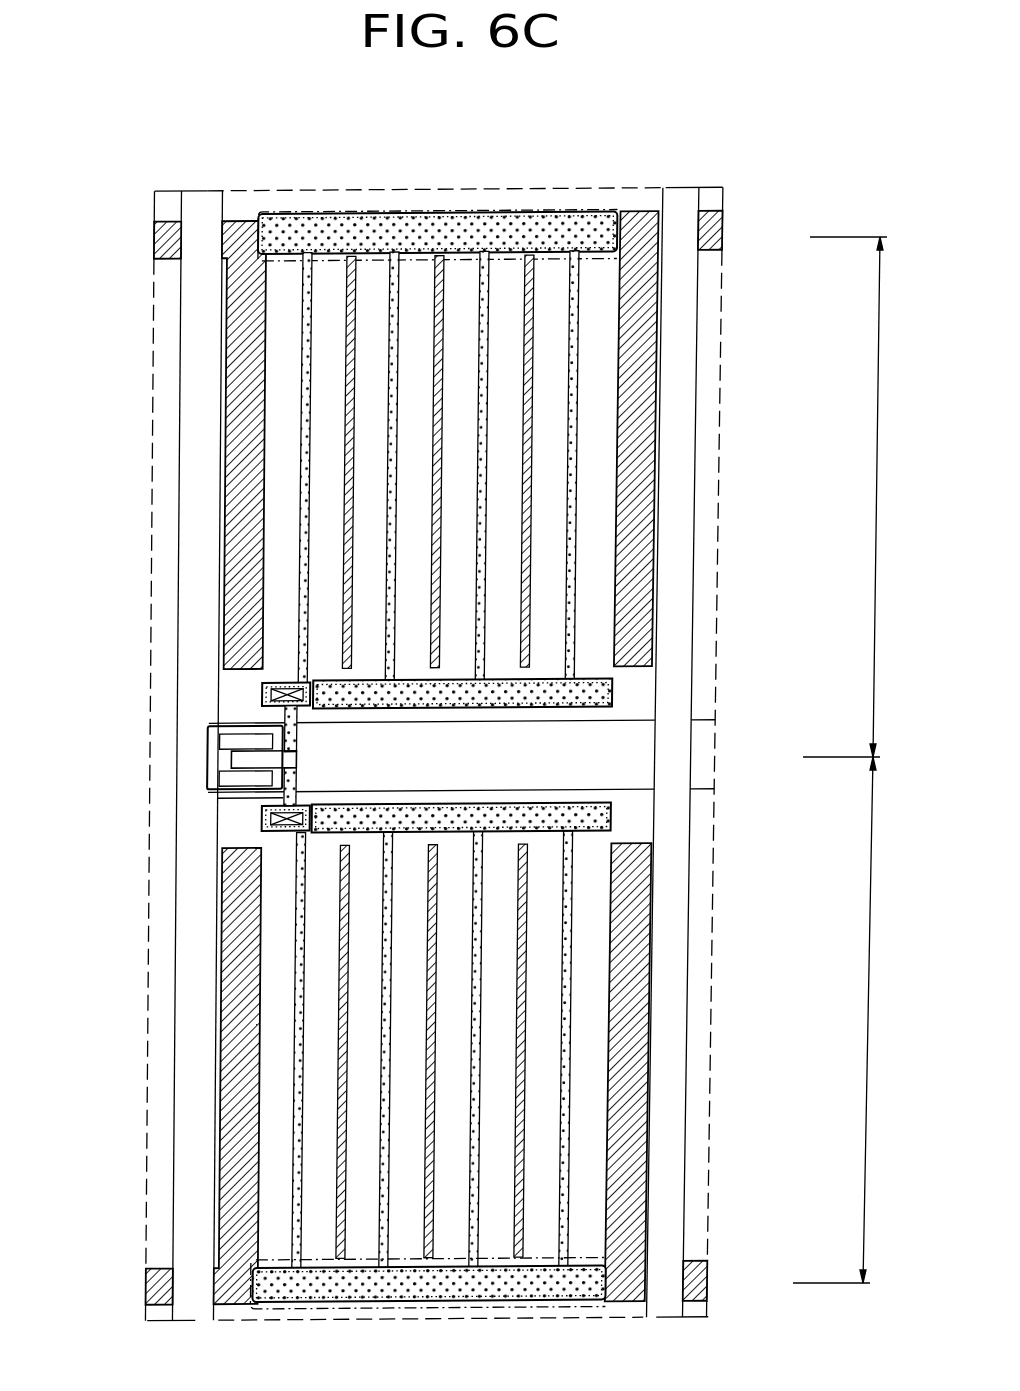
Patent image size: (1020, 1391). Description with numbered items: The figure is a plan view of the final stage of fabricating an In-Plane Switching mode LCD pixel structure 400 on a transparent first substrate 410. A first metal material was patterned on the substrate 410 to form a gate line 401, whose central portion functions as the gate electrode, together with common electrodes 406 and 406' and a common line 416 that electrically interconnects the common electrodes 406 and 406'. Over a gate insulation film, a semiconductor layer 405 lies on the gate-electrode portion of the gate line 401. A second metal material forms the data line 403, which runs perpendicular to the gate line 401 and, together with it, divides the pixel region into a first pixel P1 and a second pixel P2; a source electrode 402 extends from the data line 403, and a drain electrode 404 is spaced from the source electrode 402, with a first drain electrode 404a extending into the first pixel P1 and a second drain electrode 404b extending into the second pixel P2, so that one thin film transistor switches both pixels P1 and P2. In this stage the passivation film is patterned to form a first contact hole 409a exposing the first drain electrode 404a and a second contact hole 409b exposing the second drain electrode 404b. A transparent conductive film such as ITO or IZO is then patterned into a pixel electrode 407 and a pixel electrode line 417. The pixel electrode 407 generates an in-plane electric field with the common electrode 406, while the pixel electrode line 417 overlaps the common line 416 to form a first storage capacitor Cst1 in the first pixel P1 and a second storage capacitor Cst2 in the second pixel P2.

The array substrate pixel 400 is at (110, 161).
The gate line 401 is at (700, 737).
The source electrode 402 is at (246, 728).
The data line 403 is at (190, 458).
The drain electrode 404 is at (236, 763).
The first drain electrode 404a is at (264, 708).
The second drain electrode 404b is at (291, 794).
The semiconductor layer 405 is at (224, 758).
The common electrode 406 is at (435, 678).
The common electrode 406' is at (449, 757).
The pixel electrode 407 is at (385, 290).
The first contact hole 409a is at (262, 685).
The second contact hole 409b is at (278, 832).
The transparent first substrate 410 is at (723, 198).
The common line 416 is at (723, 233).
The pixel electrode line 417 is at (523, 213).
The first storage capacitor Cst1 is at (469, 210).
The second storage capacitor Cst2 is at (603, 1252).
The first pixel P1 is at (855, 497).
The second pixel P2 is at (850, 1020).